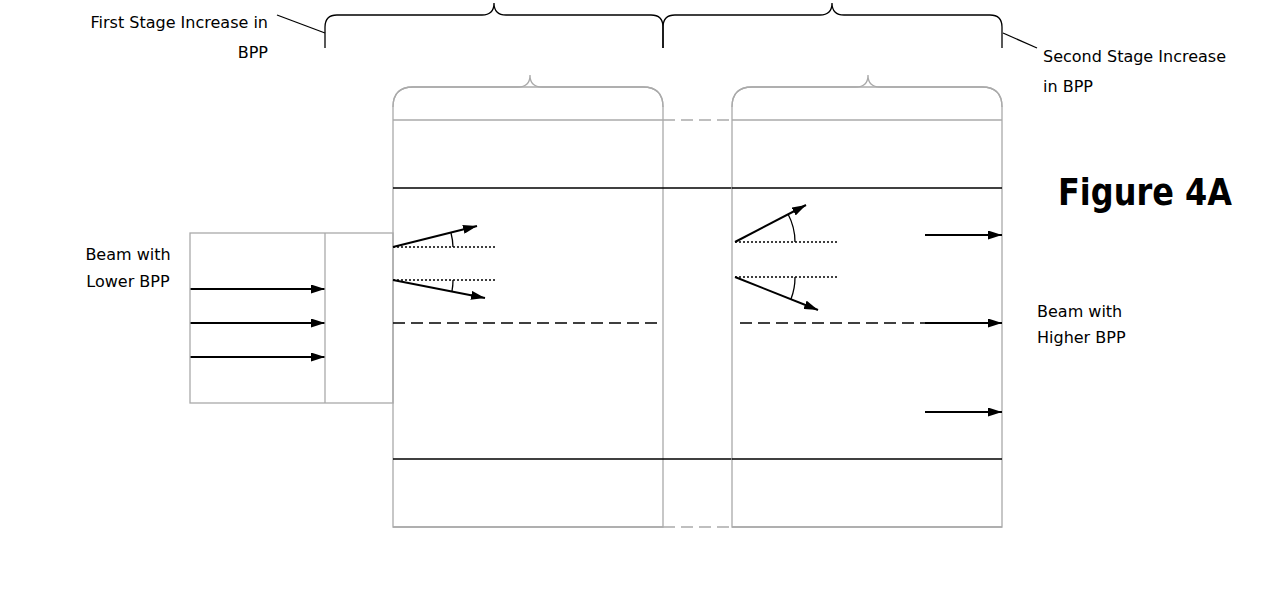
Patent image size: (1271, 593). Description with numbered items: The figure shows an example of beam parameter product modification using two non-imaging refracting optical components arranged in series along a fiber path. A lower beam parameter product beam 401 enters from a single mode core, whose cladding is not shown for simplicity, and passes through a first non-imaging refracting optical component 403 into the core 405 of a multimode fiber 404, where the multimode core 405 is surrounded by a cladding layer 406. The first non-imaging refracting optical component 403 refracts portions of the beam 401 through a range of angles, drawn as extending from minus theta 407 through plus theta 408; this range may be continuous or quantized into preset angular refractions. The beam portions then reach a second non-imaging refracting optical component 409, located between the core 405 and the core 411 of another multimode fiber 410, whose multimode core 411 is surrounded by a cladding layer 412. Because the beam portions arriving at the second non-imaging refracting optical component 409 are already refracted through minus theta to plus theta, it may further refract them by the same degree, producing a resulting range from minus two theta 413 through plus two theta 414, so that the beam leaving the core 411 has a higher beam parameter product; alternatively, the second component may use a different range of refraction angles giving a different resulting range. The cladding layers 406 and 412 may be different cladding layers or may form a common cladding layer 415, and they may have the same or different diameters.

The lower beam parameter product beam 401 is at (183, 290).
The first non-imaging refracting optical component 403 is at (345, 331).
The multimode fiber 404 is at (528, 283).
The core 405 is at (410, 446).
The cladding layer 406 is at (537, 513).
The −θ refraction angle 407 is at (487, 297).
The +θ refraction angle 408 is at (478, 228).
The second non-imaging refracting optical component 409 is at (682, 331).
The multimode fiber 410 is at (867, 283).
The core 411 is at (993, 418).
The cladding layer 412 is at (925, 513).
The −2θ refraction angle 413 is at (812, 306).
The +2θ refraction angle 414 is at (806, 205).
The common cladding layer 415 is at (700, 527).